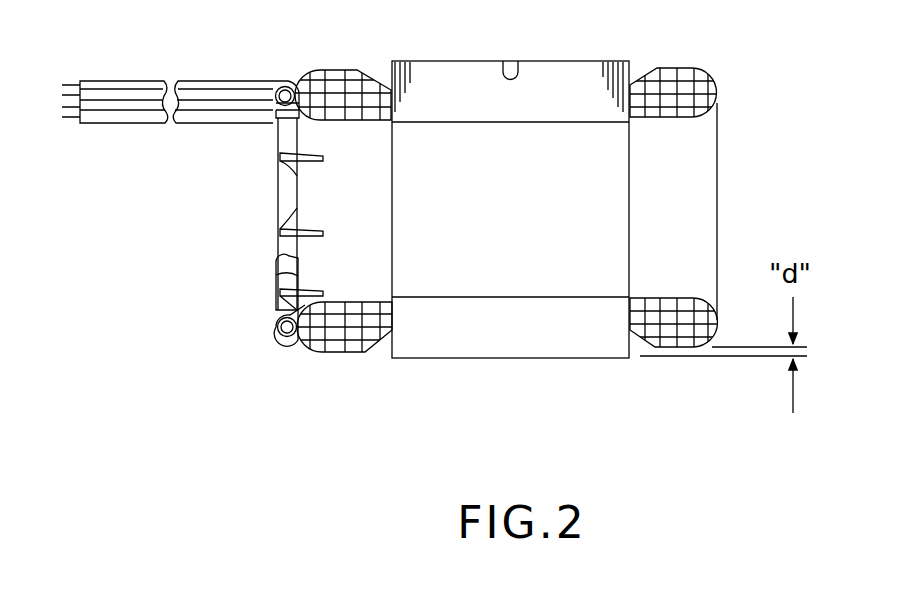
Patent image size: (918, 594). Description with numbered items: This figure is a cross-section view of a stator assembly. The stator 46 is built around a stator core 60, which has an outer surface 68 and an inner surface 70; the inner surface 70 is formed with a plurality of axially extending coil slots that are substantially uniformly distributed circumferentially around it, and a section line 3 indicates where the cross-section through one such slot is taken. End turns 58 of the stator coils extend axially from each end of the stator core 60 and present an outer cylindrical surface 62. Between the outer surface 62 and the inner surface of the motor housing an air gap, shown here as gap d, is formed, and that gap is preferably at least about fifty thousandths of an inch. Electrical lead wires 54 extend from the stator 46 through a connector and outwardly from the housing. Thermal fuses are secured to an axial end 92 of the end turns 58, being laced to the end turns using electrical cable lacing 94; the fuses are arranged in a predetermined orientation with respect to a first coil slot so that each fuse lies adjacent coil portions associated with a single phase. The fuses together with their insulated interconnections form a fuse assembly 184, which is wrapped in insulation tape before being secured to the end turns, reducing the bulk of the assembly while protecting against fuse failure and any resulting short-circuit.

The electrical lead wires 54 is at (152, 78).
The outer cylindrical surface 62 is at (307, 68).
The end turns 58 is at (344, 72).
The stator 46 is at (505, 229).
The electrical cable lacing 94 is at (292, 176).
The fuse assembly 184 is at (228, 215).
The axial end 92 is at (284, 338).
The inner surface 70 is at (597, 197).
The outer surface 68 is at (417, 360).
The stator core 60 is at (603, 342).
The section line 3- 3 is at (515, 297).